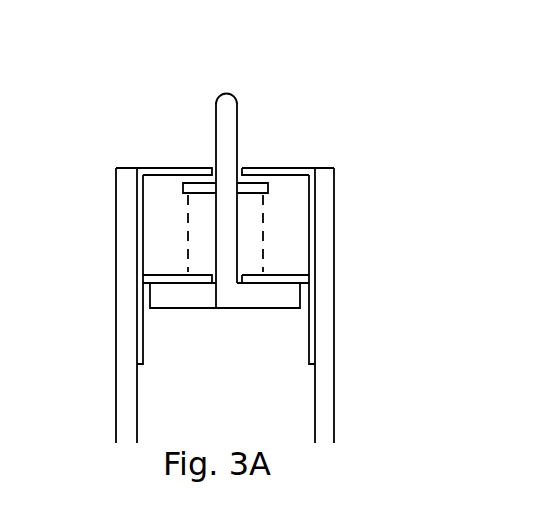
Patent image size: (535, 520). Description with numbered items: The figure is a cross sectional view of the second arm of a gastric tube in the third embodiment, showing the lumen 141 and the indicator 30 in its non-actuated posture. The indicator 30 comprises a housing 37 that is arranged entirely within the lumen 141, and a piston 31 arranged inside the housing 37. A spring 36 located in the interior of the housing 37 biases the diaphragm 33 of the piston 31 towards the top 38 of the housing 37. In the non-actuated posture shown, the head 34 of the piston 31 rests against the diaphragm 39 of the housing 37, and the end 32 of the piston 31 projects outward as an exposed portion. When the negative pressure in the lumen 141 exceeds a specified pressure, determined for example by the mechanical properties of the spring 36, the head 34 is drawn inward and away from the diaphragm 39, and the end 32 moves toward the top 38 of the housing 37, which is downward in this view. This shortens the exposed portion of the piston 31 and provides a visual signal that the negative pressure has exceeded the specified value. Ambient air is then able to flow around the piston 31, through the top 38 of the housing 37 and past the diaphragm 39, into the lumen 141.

The indicator 30 is at (331, 157).
The piston 31 is at (237, 145).
The end 32 is at (218, 88).
The diaphragm 33 is at (243, 187).
The head 34 is at (163, 295).
The spring 36 is at (265, 232).
The housing 37 is at (138, 232).
The top 38 is at (150, 170).
The diaphragm 39 is at (312, 275).
The lumen 141 is at (182, 328).